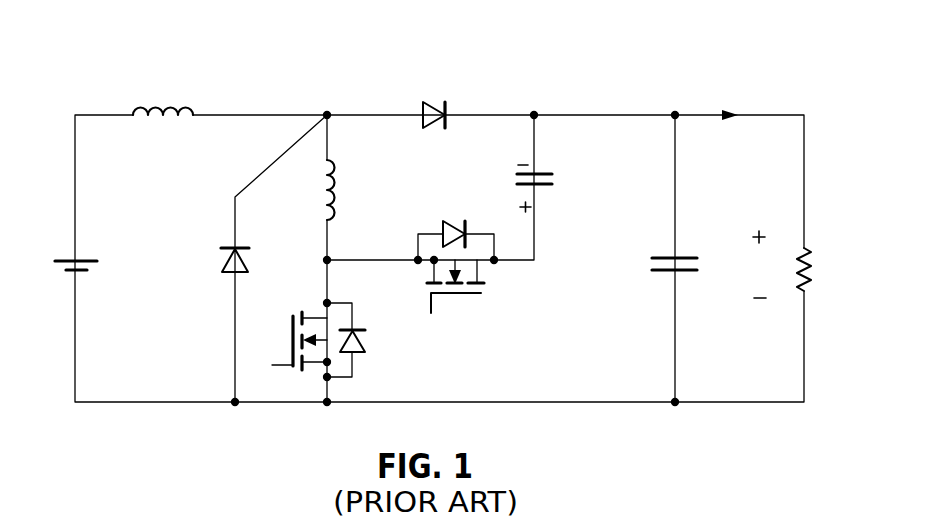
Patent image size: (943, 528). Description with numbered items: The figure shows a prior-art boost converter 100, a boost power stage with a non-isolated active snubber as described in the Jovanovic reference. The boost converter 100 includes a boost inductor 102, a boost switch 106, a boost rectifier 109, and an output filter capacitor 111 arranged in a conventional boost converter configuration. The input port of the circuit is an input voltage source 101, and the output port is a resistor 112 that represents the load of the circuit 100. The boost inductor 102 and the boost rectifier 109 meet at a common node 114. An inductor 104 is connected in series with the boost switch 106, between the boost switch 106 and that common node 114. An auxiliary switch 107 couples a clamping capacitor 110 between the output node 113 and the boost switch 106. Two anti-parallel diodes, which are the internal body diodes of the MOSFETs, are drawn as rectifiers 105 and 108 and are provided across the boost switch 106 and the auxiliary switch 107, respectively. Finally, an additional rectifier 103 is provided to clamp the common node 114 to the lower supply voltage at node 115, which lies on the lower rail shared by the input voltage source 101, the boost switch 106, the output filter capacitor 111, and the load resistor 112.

The boost converter 100 is at (595, 48).
The input voltage source 101 is at (93, 258).
The boost inductor 102 is at (186, 106).
The rectifier 103 is at (224, 278).
The inductor 104 is at (337, 162).
The rectifier 105 is at (365, 345).
The boost switch 106 is at (283, 370).
The auxiliary switch 107 is at (482, 294).
The rectifier 108 is at (450, 221).
The boost rectifier 109 is at (440, 128).
The clamping capacitor 110 is at (543, 190).
The output filter capacitor 111 is at (686, 256).
The resistor 112 is at (810, 292).
The output node 113 is at (675, 112).
The common node 114 is at (327, 112).
The node 115 is at (234, 406).